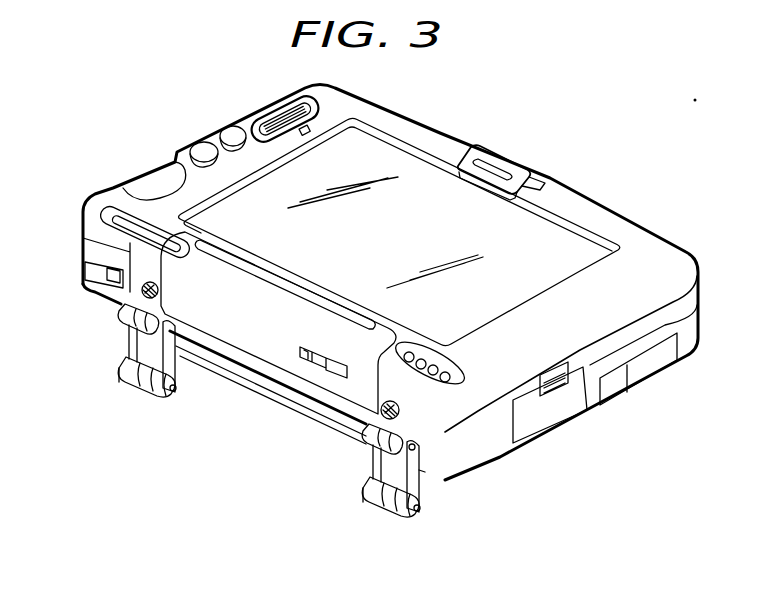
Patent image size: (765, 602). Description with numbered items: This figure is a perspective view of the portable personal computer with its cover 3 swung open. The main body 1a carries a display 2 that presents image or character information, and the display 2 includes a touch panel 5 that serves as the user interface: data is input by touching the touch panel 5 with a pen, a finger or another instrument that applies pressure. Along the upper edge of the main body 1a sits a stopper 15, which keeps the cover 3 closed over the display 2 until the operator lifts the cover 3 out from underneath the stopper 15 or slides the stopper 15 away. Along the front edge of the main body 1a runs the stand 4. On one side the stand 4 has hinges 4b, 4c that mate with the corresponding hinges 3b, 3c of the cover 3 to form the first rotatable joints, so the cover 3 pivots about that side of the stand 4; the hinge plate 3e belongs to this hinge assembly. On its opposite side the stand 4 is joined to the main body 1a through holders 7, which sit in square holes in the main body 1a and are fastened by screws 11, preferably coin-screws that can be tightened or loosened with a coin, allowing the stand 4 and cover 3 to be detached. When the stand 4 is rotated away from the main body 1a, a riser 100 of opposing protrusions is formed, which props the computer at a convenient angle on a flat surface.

The main body 1a is at (673, 267).
The display 2 is at (523, 222).
The touch panel 5 is at (397, 157).
The stopper 15 is at (505, 160).
The stand 4 is at (270, 401).
The cover 3 is at (434, 477).
The hinge 3b is at (407, 510).
The hinge 3c is at (158, 382).
The hinge plate 3e is at (423, 490).
The hinge 4b is at (387, 499).
The hinge 4c is at (147, 388).
The holder 7 is at (127, 324).
The screw 11 is at (139, 296).
The riser 100 is at (125, 391).